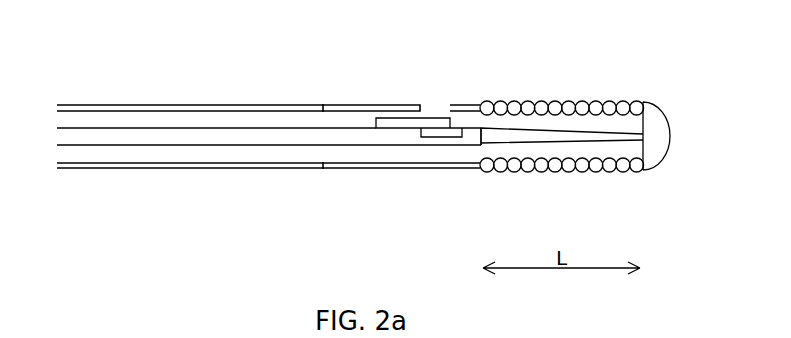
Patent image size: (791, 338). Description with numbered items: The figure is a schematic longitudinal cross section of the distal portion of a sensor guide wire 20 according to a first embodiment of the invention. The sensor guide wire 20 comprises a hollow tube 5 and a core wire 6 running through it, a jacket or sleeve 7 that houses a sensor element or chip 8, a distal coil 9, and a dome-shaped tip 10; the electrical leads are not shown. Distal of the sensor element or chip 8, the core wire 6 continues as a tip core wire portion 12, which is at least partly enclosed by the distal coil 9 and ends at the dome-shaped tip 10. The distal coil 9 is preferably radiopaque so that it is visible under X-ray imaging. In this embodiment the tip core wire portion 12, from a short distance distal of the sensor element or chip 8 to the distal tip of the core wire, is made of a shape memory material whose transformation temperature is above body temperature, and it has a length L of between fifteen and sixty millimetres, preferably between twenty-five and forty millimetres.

The hollow tube 5 is at (117, 112).
The core wire 6 is at (184, 136).
The jacket or sleeve 7 is at (382, 108).
The sensor element or chip 8 is at (435, 125).
The distal coil 9 is at (568, 108).
The dome-shaped tip 10 is at (653, 122).
The tip core wire portion 12 is at (547, 133).
The sensor guide wire 20 is at (145, 188).